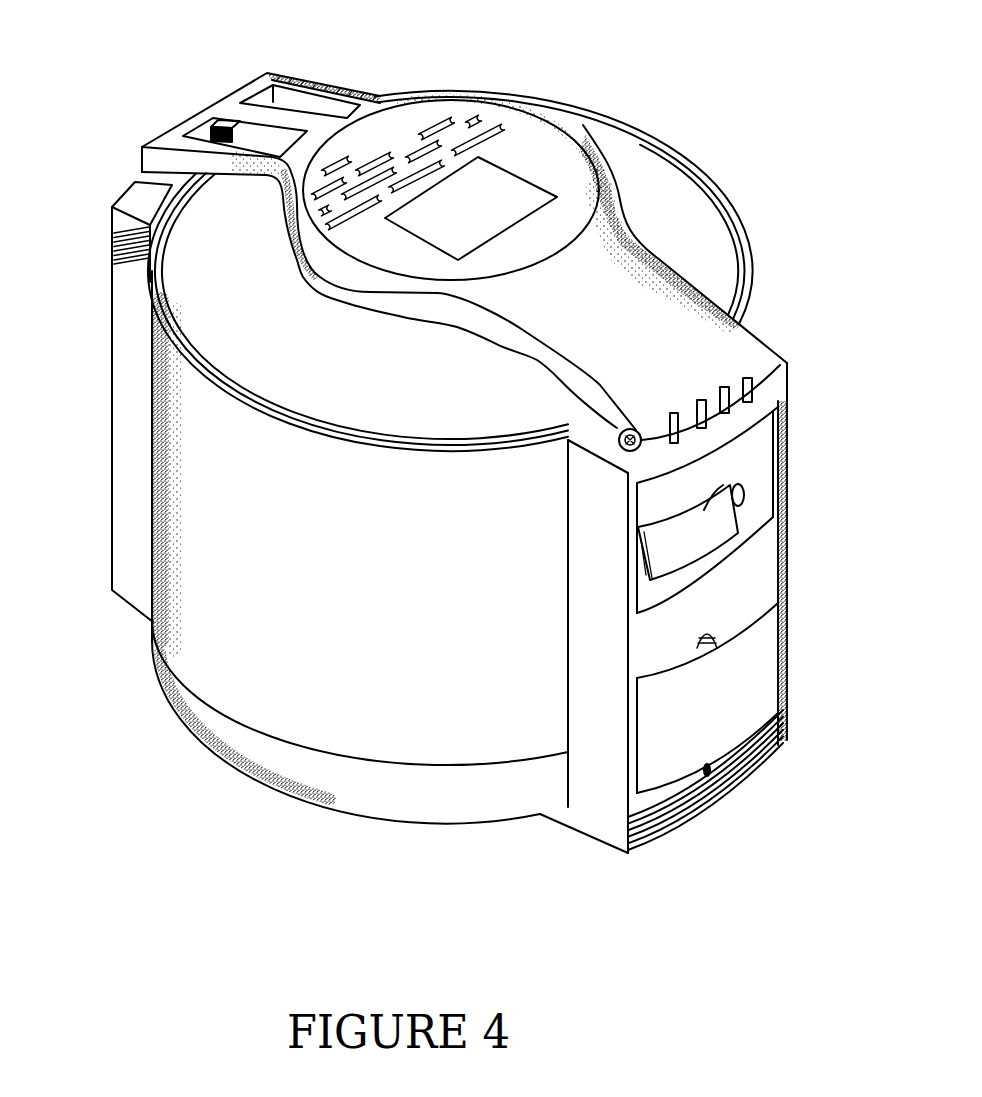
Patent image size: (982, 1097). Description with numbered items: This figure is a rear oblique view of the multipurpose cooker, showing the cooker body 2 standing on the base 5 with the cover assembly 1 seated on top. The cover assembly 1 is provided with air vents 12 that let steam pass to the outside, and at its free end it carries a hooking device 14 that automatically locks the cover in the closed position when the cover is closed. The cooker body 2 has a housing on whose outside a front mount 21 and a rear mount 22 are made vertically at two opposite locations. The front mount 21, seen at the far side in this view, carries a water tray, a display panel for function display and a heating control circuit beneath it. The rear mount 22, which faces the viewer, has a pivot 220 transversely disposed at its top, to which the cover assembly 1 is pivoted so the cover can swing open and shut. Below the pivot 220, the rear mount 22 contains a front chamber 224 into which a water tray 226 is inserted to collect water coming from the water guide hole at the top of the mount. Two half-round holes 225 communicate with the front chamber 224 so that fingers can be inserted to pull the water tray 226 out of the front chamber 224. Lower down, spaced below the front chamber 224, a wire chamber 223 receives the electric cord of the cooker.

The cover assembly 1 is at (623, 223).
The cooker body 2 is at (363, 698).
The base 5 is at (227, 742).
The air vents 12 is at (450, 118).
The hooking device 14 is at (215, 122).
The front mount 21 is at (128, 423).
The rear mount 22 is at (615, 762).
The pivot 220 is at (627, 460).
The wire chamber 223 is at (733, 700).
The front chamber 224 is at (707, 555).
The half-round holes 225 is at (742, 497).
The water tray 226 is at (707, 510).